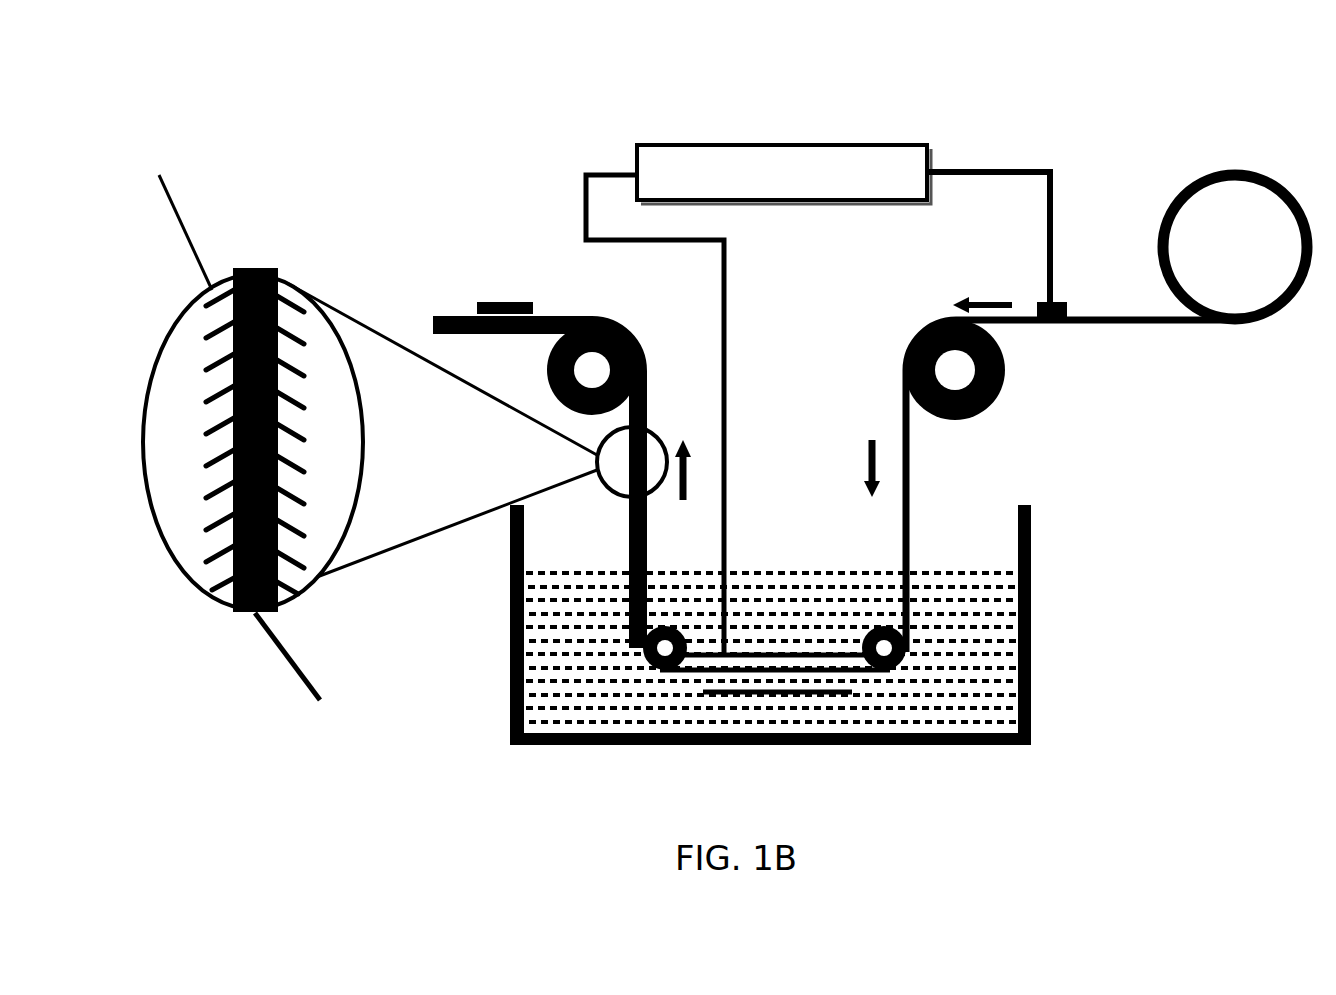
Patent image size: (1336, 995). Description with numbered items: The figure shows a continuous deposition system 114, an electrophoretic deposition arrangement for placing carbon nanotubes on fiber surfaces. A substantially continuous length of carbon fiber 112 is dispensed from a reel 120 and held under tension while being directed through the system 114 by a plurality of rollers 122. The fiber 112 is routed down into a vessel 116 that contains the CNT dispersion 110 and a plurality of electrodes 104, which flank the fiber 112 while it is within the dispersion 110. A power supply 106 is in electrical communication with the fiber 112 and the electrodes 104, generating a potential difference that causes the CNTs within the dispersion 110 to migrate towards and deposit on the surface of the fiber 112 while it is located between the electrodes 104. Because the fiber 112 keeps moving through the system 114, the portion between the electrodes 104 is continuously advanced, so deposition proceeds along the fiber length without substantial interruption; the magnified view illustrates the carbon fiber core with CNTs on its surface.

The electrodes 104 is at (778, 655).
The power supply 106 is at (835, 400).
The CNT dispersion 110 is at (1032, 640).
The carbon fiber 112 is at (1080, 332).
The continuous deposition system 114 is at (446, 113).
The vessel 116 is at (947, 742).
The reel 120 is at (1203, 176).
The rollers 122 is at (913, 332).